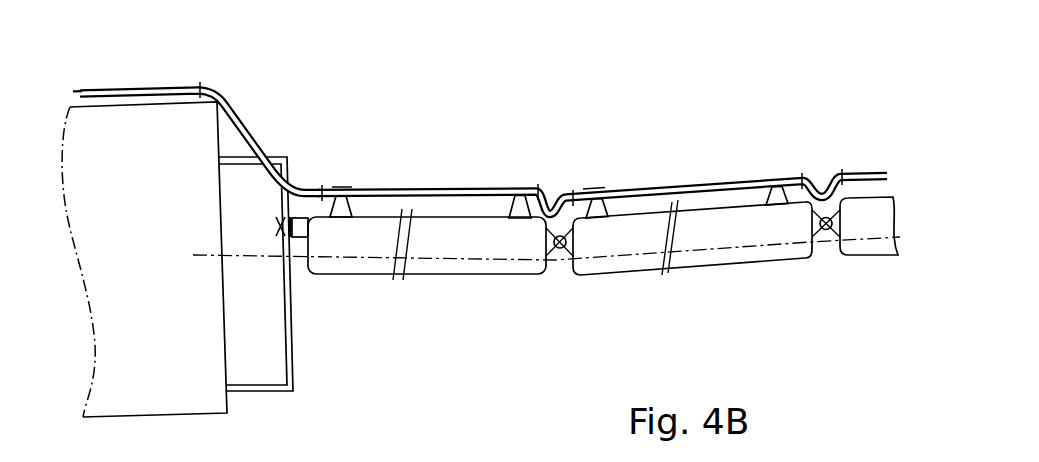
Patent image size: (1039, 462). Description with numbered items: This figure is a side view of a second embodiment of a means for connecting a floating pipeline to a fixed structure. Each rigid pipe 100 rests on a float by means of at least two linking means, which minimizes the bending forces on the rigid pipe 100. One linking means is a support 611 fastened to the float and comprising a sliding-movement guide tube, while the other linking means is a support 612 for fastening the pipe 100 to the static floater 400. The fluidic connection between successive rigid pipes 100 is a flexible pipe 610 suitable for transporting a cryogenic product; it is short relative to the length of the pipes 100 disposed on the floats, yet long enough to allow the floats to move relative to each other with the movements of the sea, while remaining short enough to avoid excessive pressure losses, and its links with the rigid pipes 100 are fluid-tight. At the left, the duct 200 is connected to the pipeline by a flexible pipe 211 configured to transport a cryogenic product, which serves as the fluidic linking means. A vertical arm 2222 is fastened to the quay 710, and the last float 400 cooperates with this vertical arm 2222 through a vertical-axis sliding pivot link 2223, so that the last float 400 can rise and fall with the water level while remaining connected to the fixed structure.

The rigid pipe 100 is at (424, 179).
The duct 200 is at (143, 81).
The flexible pipe 211 is at (259, 119).
The float 400 is at (474, 235).
The flexible pipe 610 is at (549, 196).
The support 611 is at (345, 179).
The support 612 is at (517, 189).
The quay 710 is at (210, 331).
The vertical arm 2222 is at (295, 364).
The vertical-axis sliding pivot link 2223 is at (296, 238).